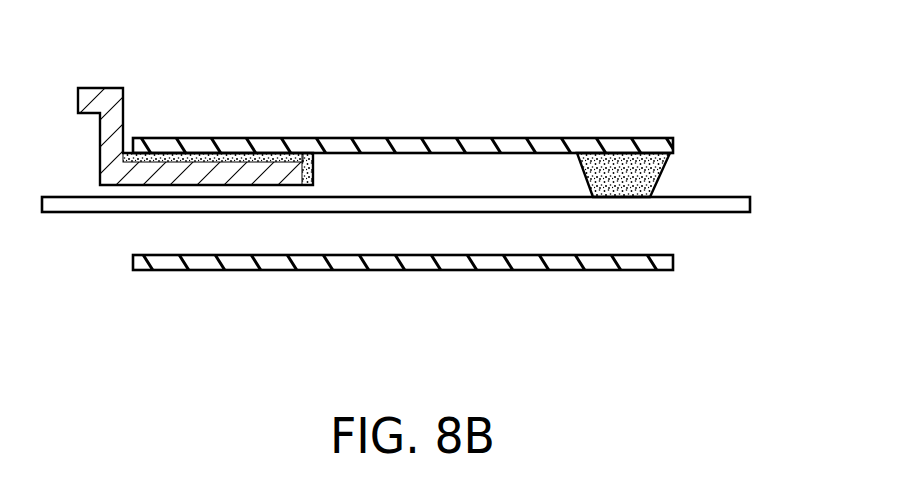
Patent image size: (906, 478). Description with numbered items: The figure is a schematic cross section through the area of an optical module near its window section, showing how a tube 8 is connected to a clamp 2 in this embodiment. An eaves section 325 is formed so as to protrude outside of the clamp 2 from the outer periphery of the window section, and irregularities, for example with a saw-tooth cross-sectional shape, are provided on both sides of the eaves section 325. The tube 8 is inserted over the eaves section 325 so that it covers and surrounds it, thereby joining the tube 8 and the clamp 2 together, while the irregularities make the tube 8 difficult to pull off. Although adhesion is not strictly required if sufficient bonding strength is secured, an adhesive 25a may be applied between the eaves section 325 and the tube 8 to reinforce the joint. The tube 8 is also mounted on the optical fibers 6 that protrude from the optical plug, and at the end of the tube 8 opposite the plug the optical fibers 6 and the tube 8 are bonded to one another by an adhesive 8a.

The clamp 2 is at (111, 86).
The optical fibers 6 is at (72, 202).
The tube 8 is at (443, 142).
The adhesive 8a is at (666, 174).
The eaves section 325 is at (204, 158).
The adhesive 25a is at (305, 158).